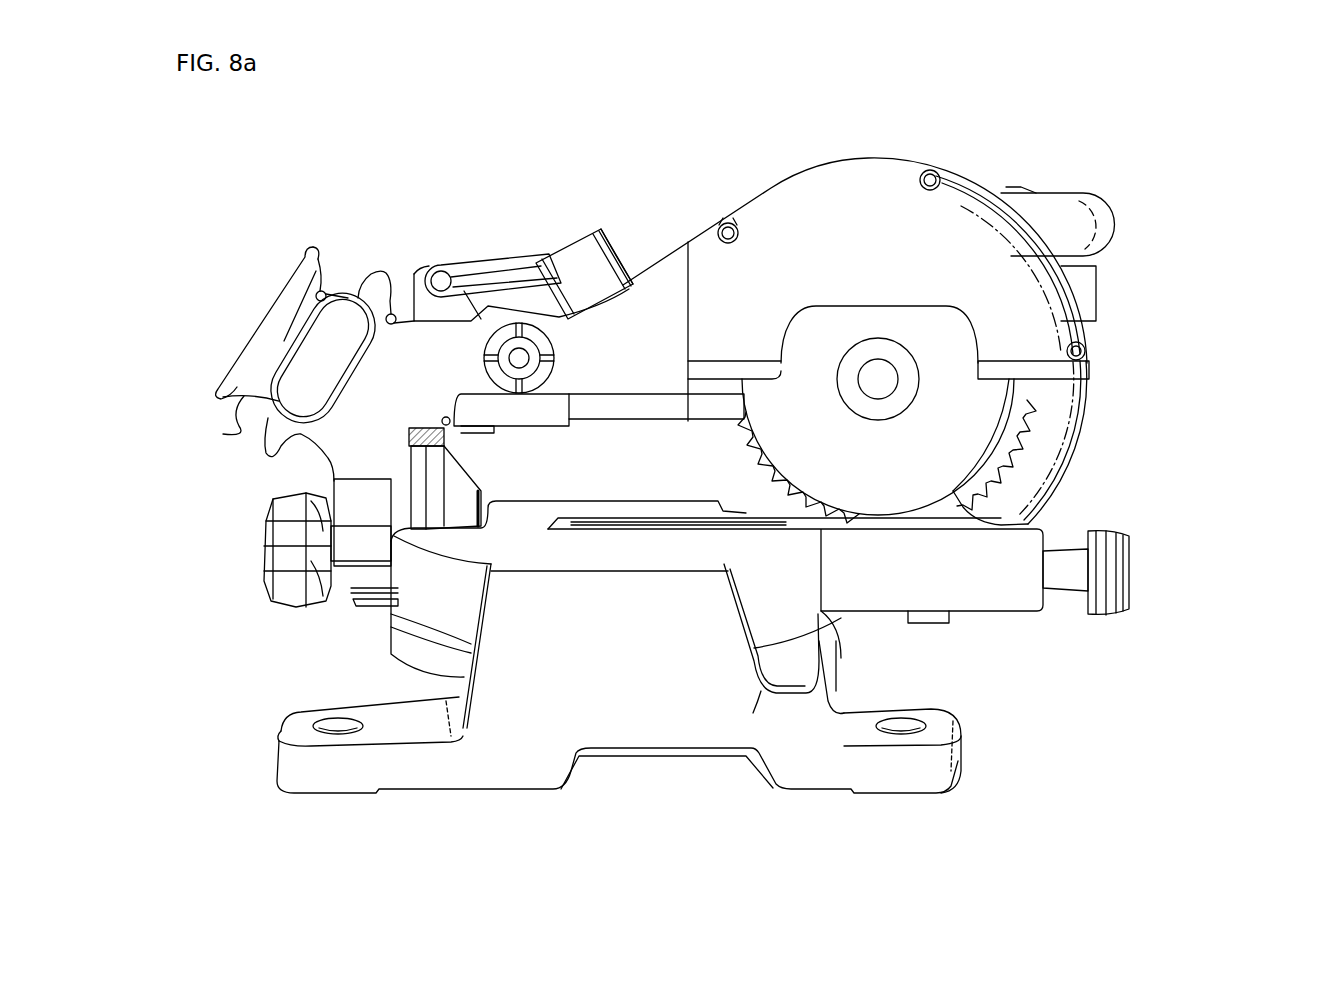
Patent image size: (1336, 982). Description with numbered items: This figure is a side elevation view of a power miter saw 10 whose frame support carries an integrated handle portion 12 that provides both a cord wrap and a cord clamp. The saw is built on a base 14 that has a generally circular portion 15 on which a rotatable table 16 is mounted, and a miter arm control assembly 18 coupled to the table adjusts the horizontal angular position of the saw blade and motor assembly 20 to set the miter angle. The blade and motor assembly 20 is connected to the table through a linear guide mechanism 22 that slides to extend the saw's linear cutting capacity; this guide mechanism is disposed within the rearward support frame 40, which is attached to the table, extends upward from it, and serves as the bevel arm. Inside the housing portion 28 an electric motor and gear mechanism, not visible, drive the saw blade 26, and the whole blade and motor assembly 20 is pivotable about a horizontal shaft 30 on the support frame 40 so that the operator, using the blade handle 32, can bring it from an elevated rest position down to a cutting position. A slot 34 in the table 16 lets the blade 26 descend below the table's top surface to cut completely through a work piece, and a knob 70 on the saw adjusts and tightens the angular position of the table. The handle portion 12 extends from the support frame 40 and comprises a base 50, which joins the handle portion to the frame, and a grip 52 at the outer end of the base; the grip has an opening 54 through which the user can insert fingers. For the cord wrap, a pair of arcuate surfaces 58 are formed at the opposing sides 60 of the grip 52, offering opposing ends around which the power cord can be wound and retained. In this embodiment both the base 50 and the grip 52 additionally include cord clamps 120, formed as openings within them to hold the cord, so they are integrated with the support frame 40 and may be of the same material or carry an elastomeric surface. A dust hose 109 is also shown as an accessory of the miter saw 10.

The miter saw 10 is at (1055, 120).
The handle portion 12 is at (291, 319).
The base 14 is at (470, 762).
The generally circular portion 15 is at (850, 642).
The rotatable table 16 is at (398, 602).
The miter arm control assembly 18 is at (312, 480).
The saw blade and motor assembly 20 is at (1108, 410).
The linear guide mechanism 22 is at (652, 256).
The saw blade 26 is at (1035, 442).
The housing portion 28 is at (790, 175).
The horizontal shaft 30 is at (518, 357).
The blade handle 32 is at (1085, 197).
The slot 34 is at (610, 518).
The support frame 40 is at (427, 285).
The base 50 is at (345, 395).
The grip 52 is at (268, 320).
The opening 54 is at (350, 315).
The arcuate surfaces 58 is at (312, 244).
The opposing sides 60 is at (322, 290).
The knob 70 is at (1140, 552).
The dust hose 109 is at (598, 245).
The cord clamps 120 is at (391, 306).